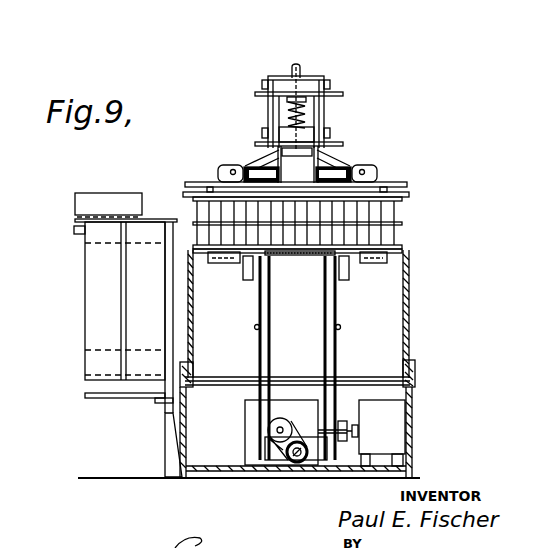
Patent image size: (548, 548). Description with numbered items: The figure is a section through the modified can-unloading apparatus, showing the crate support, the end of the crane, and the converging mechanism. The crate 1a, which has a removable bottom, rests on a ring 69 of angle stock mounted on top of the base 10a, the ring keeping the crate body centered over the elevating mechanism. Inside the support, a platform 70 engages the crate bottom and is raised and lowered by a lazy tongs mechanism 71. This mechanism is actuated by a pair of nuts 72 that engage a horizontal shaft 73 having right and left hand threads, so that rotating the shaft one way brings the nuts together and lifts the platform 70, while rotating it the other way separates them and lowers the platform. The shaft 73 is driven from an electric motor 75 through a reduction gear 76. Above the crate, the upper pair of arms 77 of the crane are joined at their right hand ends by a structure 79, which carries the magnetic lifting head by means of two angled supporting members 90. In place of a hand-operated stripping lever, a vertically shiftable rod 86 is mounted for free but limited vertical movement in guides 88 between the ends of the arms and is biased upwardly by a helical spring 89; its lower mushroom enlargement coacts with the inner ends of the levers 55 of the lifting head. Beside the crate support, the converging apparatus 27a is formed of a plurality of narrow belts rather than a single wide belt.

The vertically shiftable rod 86 is at (302, 65).
The structure 79 is at (327, 77).
The upper pair of arms 77 is at (333, 94).
The helical spring 89 is at (289, 113).
The guides 88 is at (314, 121).
The levers 55 is at (280, 160).
The angled supporting members 90 is at (268, 167).
The platform 70 is at (222, 264).
The lazy tongs mechanism 71 is at (258, 310).
The crate 1a is at (411, 301).
The ring 69 is at (414, 369).
The base 10a is at (416, 449).
The reduction gear 76 is at (245, 424).
The electric motor 75 is at (397, 420).
The nuts 72 is at (275, 456).
The horizontal shaft 73 is at (297, 463).
The converging apparatus 27a is at (143, 305).